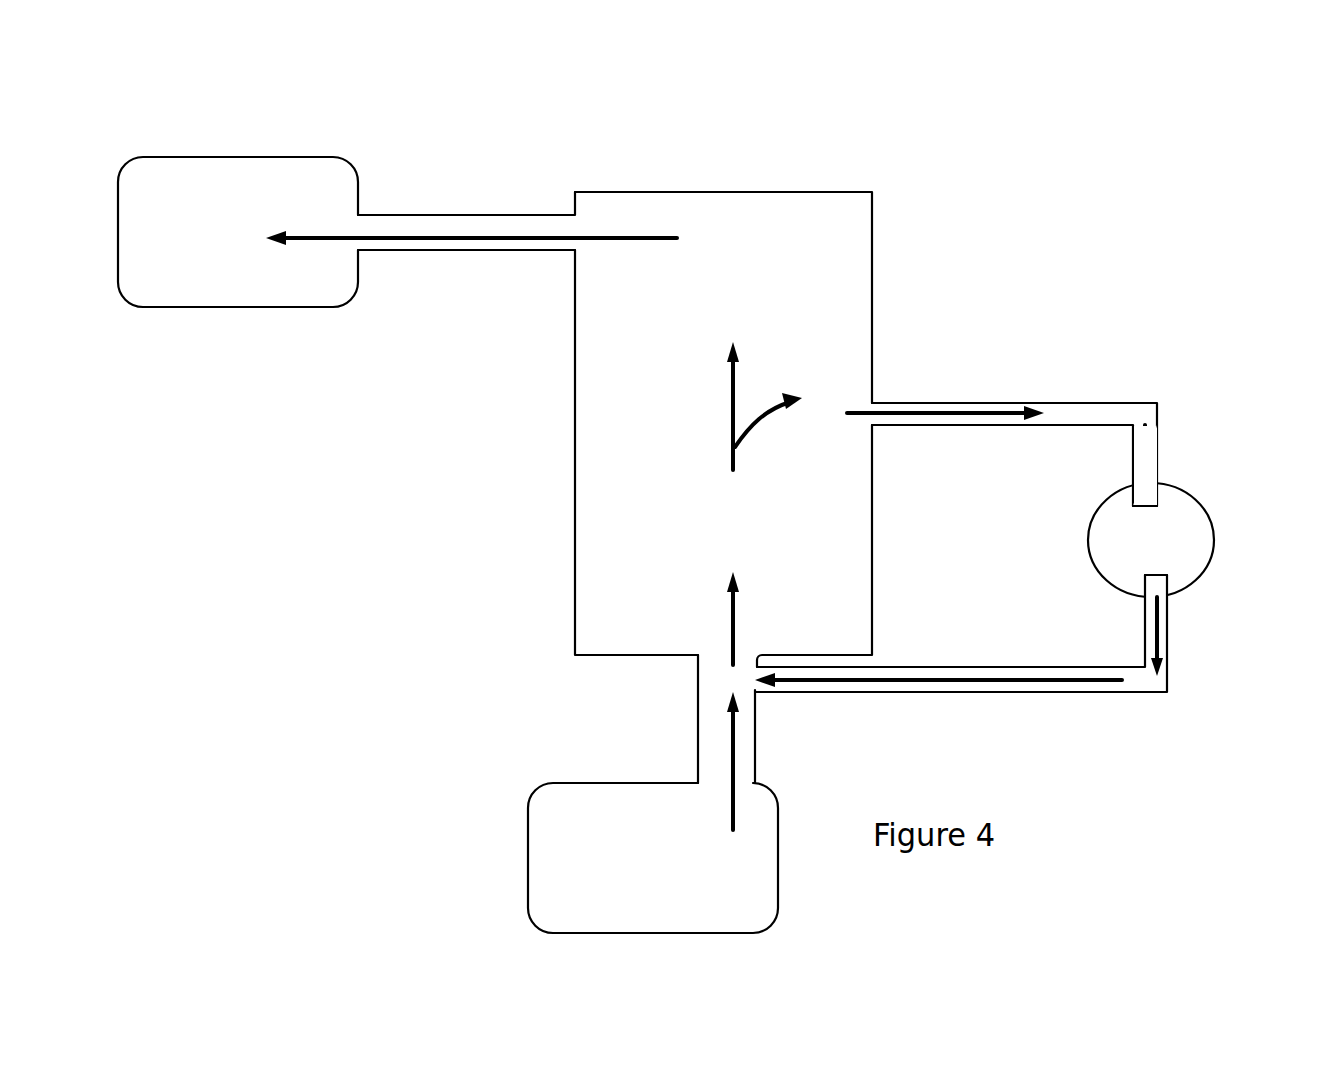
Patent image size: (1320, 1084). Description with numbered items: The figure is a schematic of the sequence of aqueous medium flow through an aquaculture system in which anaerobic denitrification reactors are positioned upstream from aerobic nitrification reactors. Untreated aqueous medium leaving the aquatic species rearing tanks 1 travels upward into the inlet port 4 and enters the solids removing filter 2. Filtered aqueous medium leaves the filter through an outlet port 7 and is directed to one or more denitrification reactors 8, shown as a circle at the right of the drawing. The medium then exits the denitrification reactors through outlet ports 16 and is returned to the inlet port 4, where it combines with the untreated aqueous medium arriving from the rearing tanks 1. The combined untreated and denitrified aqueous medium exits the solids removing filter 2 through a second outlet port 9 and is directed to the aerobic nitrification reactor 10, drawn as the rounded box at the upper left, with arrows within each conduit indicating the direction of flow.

The aquatic species rearing tanks 1 is at (494, 849).
The solids removing filter 2 is at (895, 514).
The inlet port 4 is at (668, 727).
The outlet port 7 is at (993, 375).
The denitrification reactors 8 is at (1222, 492).
The outlet port 9 is at (463, 182).
The aerobic nitrification reactor 10 is at (252, 333).
The outlet ports 16 is at (1132, 702).